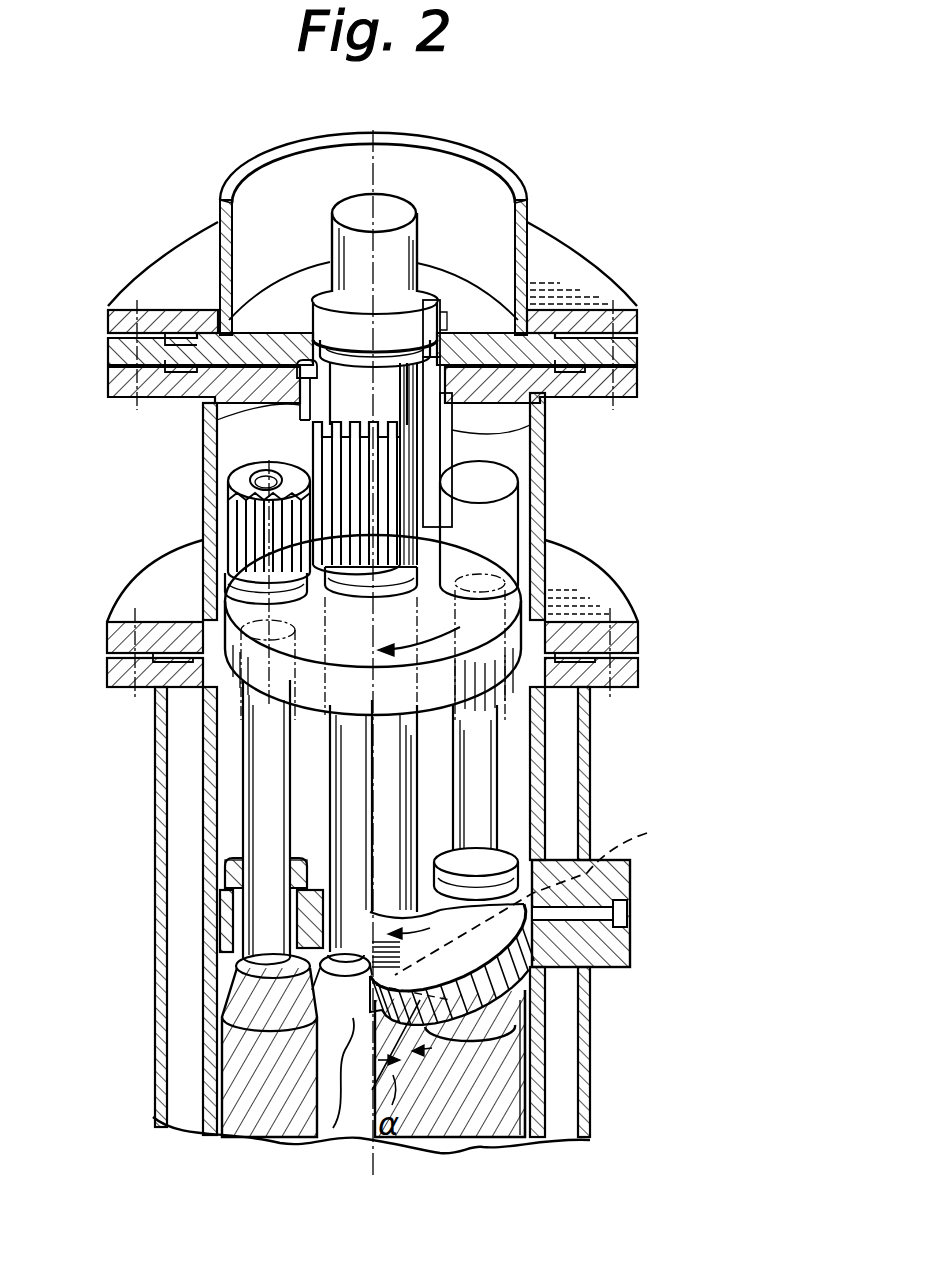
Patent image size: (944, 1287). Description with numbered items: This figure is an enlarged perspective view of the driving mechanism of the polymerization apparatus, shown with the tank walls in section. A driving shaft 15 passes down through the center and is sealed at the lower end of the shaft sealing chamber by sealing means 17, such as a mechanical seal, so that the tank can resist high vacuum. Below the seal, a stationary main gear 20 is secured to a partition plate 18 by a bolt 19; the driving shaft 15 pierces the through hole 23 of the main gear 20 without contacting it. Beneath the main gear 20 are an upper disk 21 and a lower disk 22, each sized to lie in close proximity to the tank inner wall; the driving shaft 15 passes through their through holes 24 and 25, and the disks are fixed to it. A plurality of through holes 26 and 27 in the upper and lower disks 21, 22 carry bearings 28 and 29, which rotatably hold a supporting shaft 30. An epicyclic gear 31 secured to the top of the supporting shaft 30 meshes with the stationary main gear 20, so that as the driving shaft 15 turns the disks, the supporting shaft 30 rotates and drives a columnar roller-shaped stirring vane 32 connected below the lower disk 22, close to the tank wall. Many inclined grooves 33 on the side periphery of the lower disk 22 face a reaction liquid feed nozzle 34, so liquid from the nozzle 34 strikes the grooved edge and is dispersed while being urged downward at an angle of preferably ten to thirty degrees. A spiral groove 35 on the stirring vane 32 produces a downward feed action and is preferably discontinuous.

The driving shaft 15 is at (392, 245).
The sealing means 17 is at (422, 300).
The partition plate 18 is at (640, 350).
The bolt 19 is at (305, 392).
The stationary main gear 20 is at (340, 447).
The upper disk 21 is at (508, 595).
The lower disk 22 is at (547, 983).
The through hole 23 is at (383, 400).
The through hole 24 is at (390, 578).
The through hole 25 is at (534, 917).
The through hole 26 is at (207, 707).
The through hole 27 is at (233, 917).
The bearing 28 is at (225, 589).
The bearing 29 is at (233, 882).
The supporting shaft 30 is at (477, 723).
The epicyclic gear 31 is at (237, 533).
The stirring vane 32 is at (527, 1067).
The inclined grooves 33 is at (333, 1128).
The reaction liquid feed nozzle 34 is at (612, 890).
The spiral groove 35 is at (497, 1110).